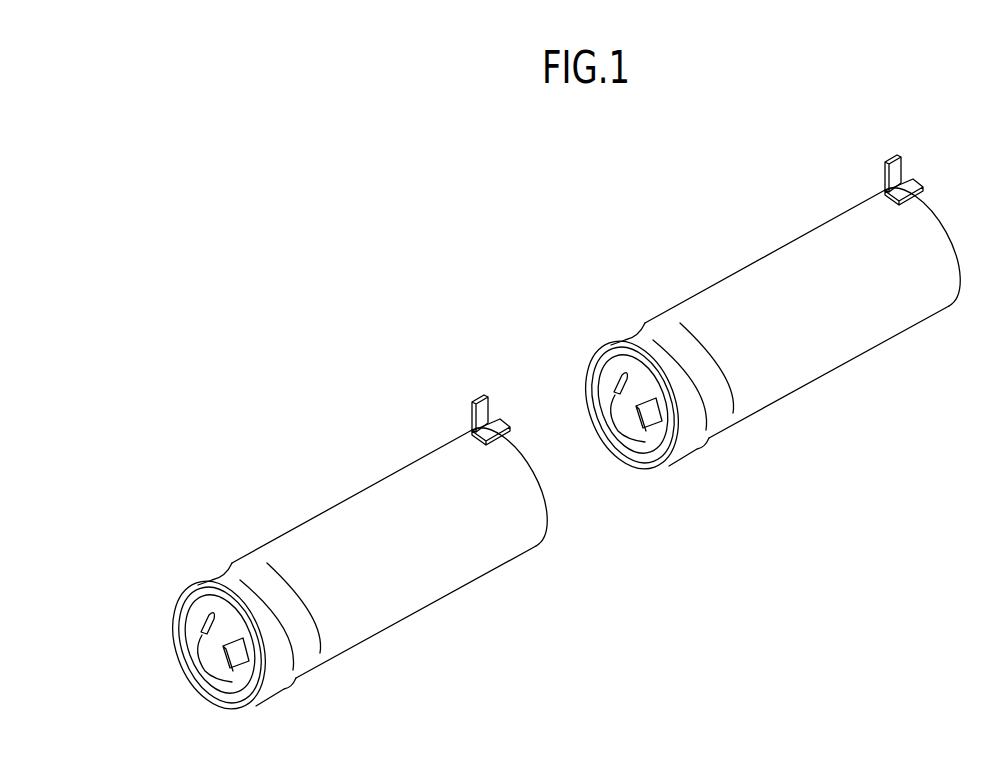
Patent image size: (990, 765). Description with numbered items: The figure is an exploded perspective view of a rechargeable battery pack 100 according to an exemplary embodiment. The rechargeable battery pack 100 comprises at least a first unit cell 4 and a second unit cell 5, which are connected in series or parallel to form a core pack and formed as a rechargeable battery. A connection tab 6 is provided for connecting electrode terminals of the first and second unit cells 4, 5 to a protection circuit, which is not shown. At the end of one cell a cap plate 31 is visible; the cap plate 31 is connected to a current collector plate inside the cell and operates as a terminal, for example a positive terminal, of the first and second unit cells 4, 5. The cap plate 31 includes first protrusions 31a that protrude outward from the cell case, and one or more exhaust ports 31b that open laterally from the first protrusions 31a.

The rechargeable battery pack 100 is at (376, 242).
The first unit cell 4 is at (409, 631).
The second unit cell 5 is at (814, 400).
The connection tab 6 is at (493, 386).
The cap plate 31 is at (767, 538).
The first protrusions 31a is at (643, 441).
The exhaust ports 31b is at (656, 412).